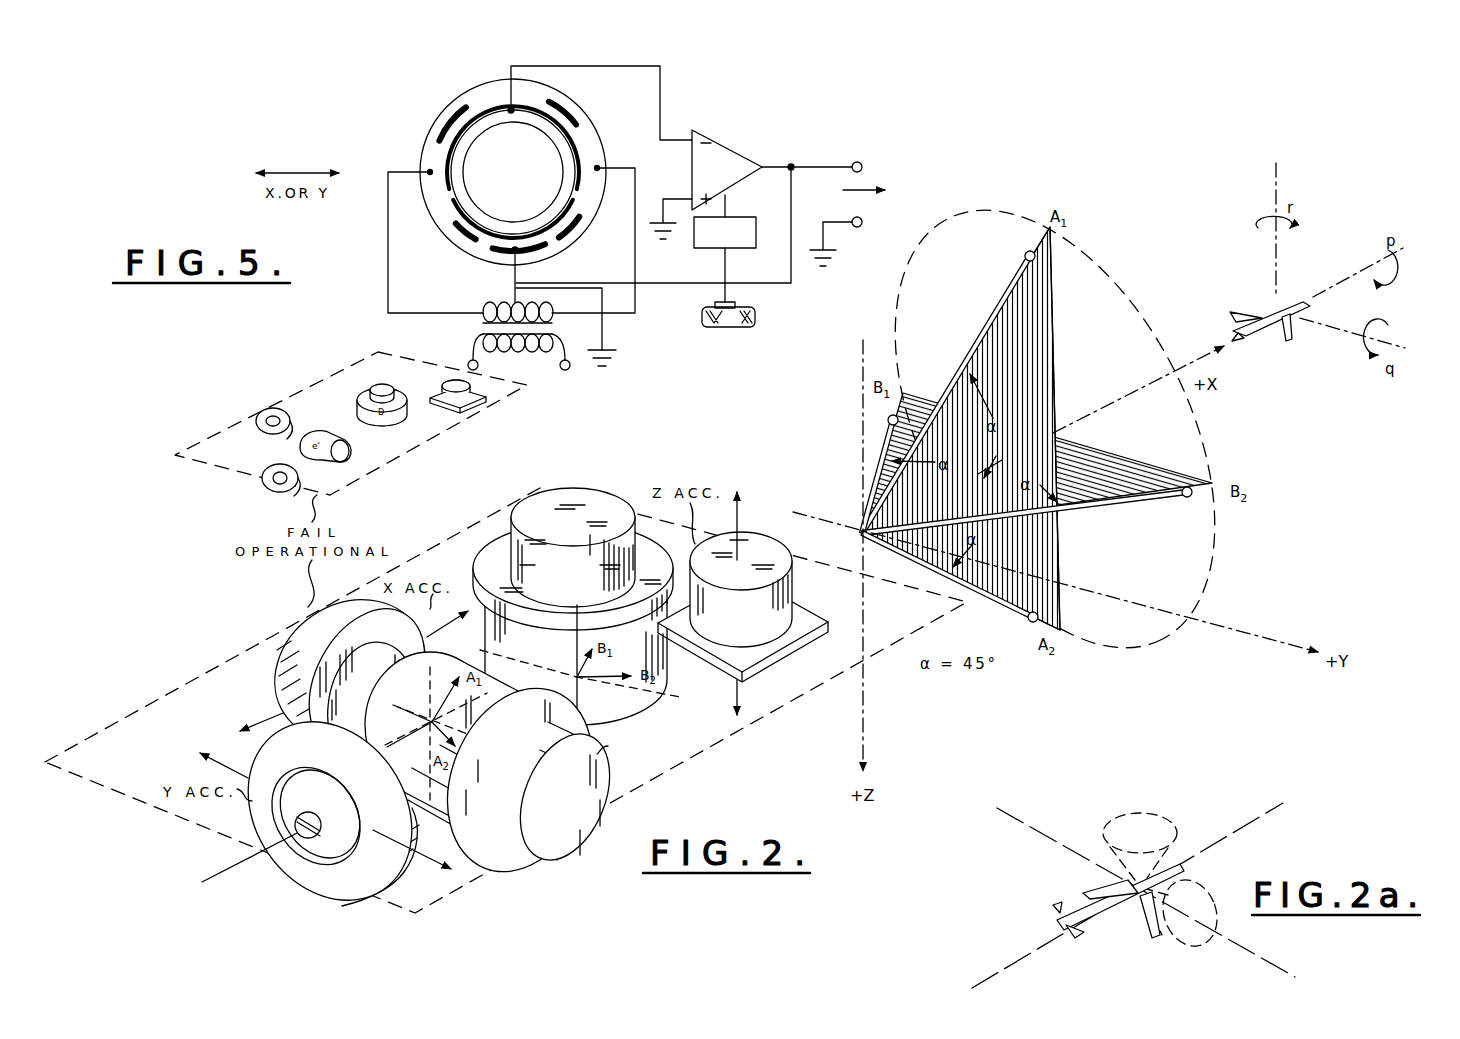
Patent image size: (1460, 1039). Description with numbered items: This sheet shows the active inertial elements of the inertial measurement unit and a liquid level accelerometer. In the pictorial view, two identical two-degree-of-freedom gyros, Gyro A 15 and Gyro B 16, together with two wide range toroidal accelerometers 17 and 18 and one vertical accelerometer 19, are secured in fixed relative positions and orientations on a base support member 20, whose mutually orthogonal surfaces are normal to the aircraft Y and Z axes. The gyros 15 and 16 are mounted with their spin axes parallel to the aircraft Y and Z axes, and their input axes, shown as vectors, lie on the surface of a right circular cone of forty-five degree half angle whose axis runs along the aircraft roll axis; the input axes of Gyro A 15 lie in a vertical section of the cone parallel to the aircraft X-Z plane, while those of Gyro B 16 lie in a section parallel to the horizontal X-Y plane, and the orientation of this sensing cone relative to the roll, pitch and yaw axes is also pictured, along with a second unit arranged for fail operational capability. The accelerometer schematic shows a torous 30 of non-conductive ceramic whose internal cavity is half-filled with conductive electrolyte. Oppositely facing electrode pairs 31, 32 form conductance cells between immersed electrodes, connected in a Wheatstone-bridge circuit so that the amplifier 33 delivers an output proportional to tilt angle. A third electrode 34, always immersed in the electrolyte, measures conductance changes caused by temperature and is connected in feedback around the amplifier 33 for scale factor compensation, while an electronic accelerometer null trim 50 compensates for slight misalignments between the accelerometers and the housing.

In FIG. 2, the TDF gyro (Gyro A) 15 is at (512, 868).
In FIG. 2, the TDF gyro (Gyro B) 16 is at (578, 489).
In FIG. 2, the wide range toroidal accelerometer 17 is at (278, 688).
In FIG. 2, the wide range toroidal accelerometer 18 is at (290, 876).
In FIG. 2, the vertical accelerometer 19 is at (780, 546).
In FIG. 2, the base support member 20 is at (793, 693).
In FIG. 5, the torous 30 is at (440, 113).
In FIG. 5, the electrode pair 31 is at (440, 140).
In FIG. 5, the electrode pair 32 is at (467, 222).
In FIG. 5, the amplifier 33 is at (727, 148).
In FIG. 5, the third electrode 34 is at (507, 252).
In FIG. 5, the electronic accelerometer null trim 50 is at (756, 243).